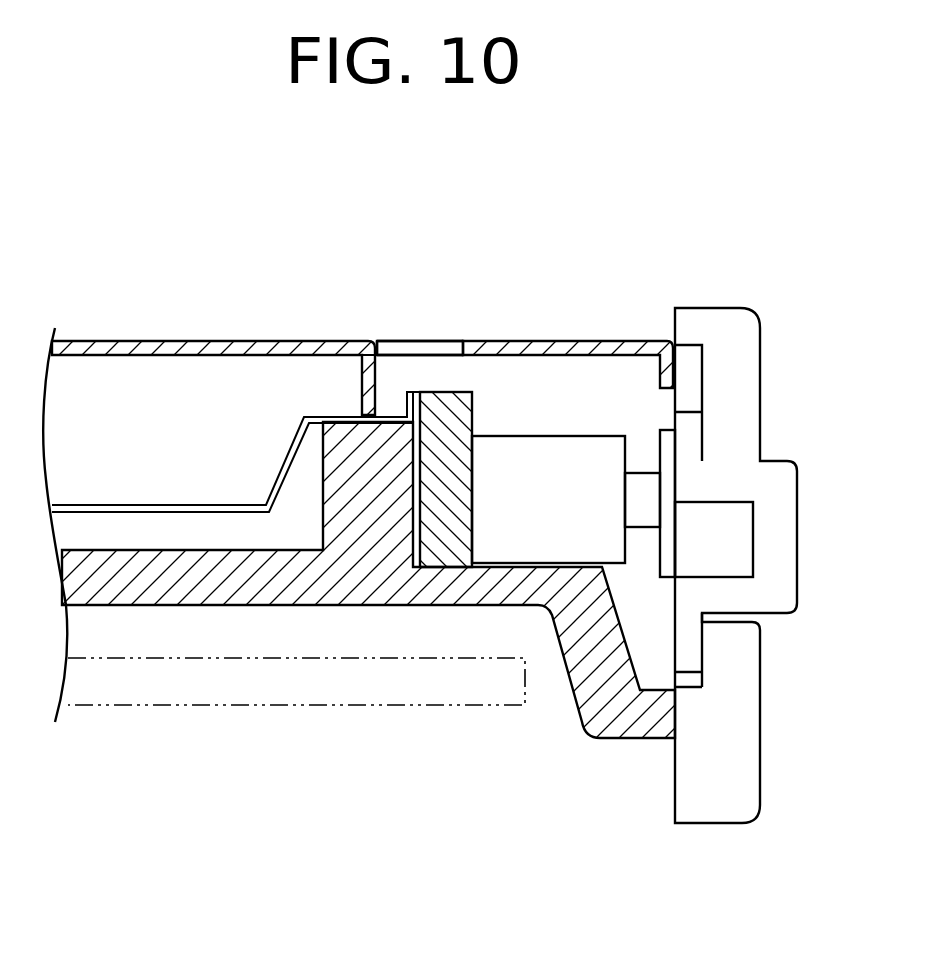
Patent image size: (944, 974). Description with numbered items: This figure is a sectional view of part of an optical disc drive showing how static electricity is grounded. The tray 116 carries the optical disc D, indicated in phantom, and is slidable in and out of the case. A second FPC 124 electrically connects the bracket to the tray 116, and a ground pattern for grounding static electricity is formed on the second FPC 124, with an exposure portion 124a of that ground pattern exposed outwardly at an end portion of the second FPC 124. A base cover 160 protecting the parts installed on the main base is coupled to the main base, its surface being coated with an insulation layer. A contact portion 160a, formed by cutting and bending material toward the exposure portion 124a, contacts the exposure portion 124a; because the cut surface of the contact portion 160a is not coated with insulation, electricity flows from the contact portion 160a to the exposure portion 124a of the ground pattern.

The tray 116 is at (598, 733).
The second FPC 124 is at (147, 512).
The exposure portion 124a is at (353, 413).
The base cover 160 is at (553, 341).
The contact portion 160a is at (382, 383).
The optical disc D is at (330, 705).